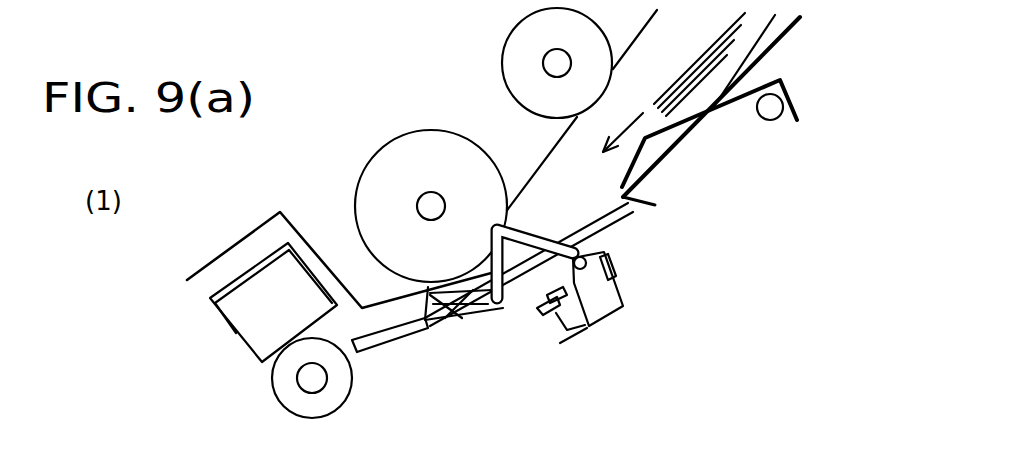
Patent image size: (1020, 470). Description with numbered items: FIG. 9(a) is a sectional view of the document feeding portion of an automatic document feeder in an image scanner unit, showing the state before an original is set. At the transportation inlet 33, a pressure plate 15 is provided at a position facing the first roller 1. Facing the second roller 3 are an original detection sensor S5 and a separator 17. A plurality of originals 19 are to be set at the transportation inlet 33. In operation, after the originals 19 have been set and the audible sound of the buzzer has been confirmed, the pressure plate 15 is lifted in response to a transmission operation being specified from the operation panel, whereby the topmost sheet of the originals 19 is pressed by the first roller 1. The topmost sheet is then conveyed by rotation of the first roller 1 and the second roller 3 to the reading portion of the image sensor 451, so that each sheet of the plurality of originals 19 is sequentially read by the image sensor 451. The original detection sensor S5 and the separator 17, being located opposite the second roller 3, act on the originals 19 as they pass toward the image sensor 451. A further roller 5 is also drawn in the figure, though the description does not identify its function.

The first roller 1 is at (510, 45).
The second roller 3 is at (372, 173).
The roller 5 is at (288, 398).
The pressure plate 15 is at (642, 155).
The separator 17 is at (472, 293).
The originals 19 is at (748, 33).
The transportation inlet 33 is at (590, 135).
The image sensor 451 is at (255, 275).
The original detection sensor S5 is at (590, 305).